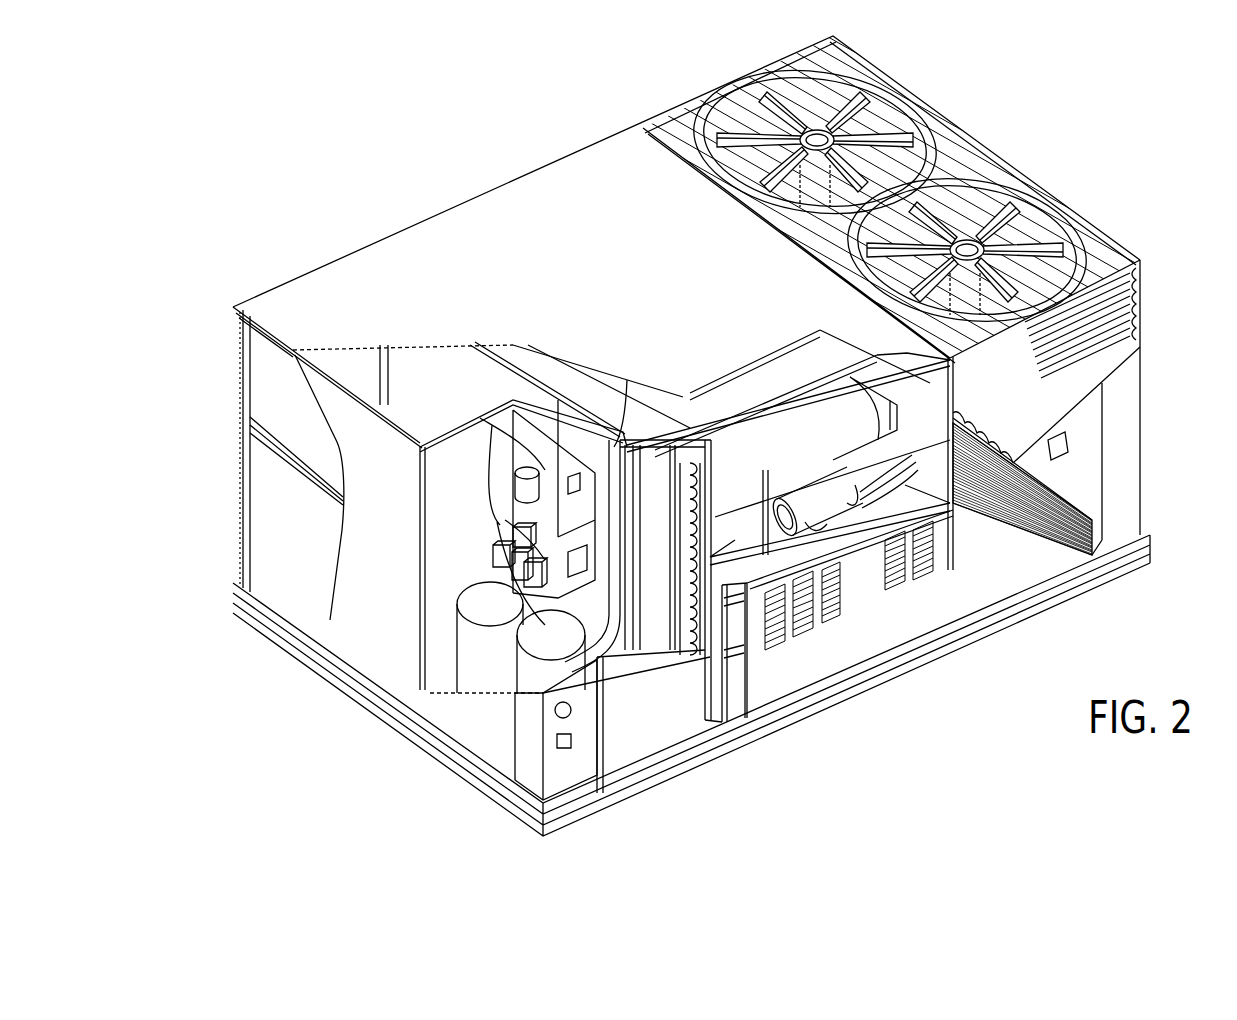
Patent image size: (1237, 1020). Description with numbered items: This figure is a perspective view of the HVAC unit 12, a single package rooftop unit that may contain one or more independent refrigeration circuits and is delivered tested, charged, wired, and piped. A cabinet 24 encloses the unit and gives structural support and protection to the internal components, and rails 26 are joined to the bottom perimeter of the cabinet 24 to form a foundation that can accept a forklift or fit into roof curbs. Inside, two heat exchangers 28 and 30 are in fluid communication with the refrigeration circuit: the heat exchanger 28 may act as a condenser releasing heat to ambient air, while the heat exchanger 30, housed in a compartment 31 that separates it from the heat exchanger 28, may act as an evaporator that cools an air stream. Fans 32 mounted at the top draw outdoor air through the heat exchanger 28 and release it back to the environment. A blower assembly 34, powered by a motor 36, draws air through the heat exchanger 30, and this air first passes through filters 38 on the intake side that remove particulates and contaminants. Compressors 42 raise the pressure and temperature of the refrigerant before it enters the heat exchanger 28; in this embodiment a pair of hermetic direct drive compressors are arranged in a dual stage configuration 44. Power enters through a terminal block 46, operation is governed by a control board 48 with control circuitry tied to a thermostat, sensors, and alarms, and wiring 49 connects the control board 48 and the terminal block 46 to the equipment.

The HVAC unit 12 is at (413, 132).
The cabinet 24 is at (277, 556).
The rails 26 is at (333, 645).
The heat exchanger 28 is at (1143, 317).
The heat exchanger 30 is at (700, 653).
The compartment 31 is at (817, 493).
The fans 32 is at (993, 184).
The blower assembly 34 is at (862, 447).
The motor 36 is at (813, 487).
The filters 38 is at (653, 477).
The compressors 42 is at (463, 630).
The dual stage configuration 44 is at (453, 581).
The terminal block 46 is at (497, 522).
The control board 48 is at (580, 547).
The wiring 49 is at (672, 463).